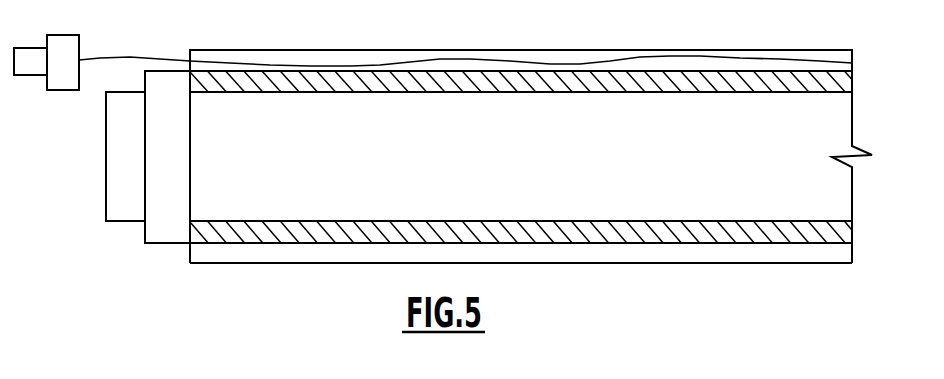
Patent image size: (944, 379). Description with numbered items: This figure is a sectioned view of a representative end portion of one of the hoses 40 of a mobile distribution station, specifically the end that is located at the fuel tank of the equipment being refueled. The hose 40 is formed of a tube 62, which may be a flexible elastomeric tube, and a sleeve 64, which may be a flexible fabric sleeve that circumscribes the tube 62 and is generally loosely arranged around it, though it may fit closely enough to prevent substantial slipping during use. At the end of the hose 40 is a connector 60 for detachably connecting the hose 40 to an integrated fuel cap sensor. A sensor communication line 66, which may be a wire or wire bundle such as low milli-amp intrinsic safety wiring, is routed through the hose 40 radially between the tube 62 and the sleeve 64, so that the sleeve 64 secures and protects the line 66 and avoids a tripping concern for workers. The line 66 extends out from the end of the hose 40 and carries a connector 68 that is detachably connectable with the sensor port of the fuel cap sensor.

The hose 40 is at (532, 193).
The connector 60 is at (122, 222).
The tube 62 is at (831, 219).
The sleeve 64 is at (793, 264).
The sensor communication line 66 is at (424, 59).
The connector 68 is at (31, 48).